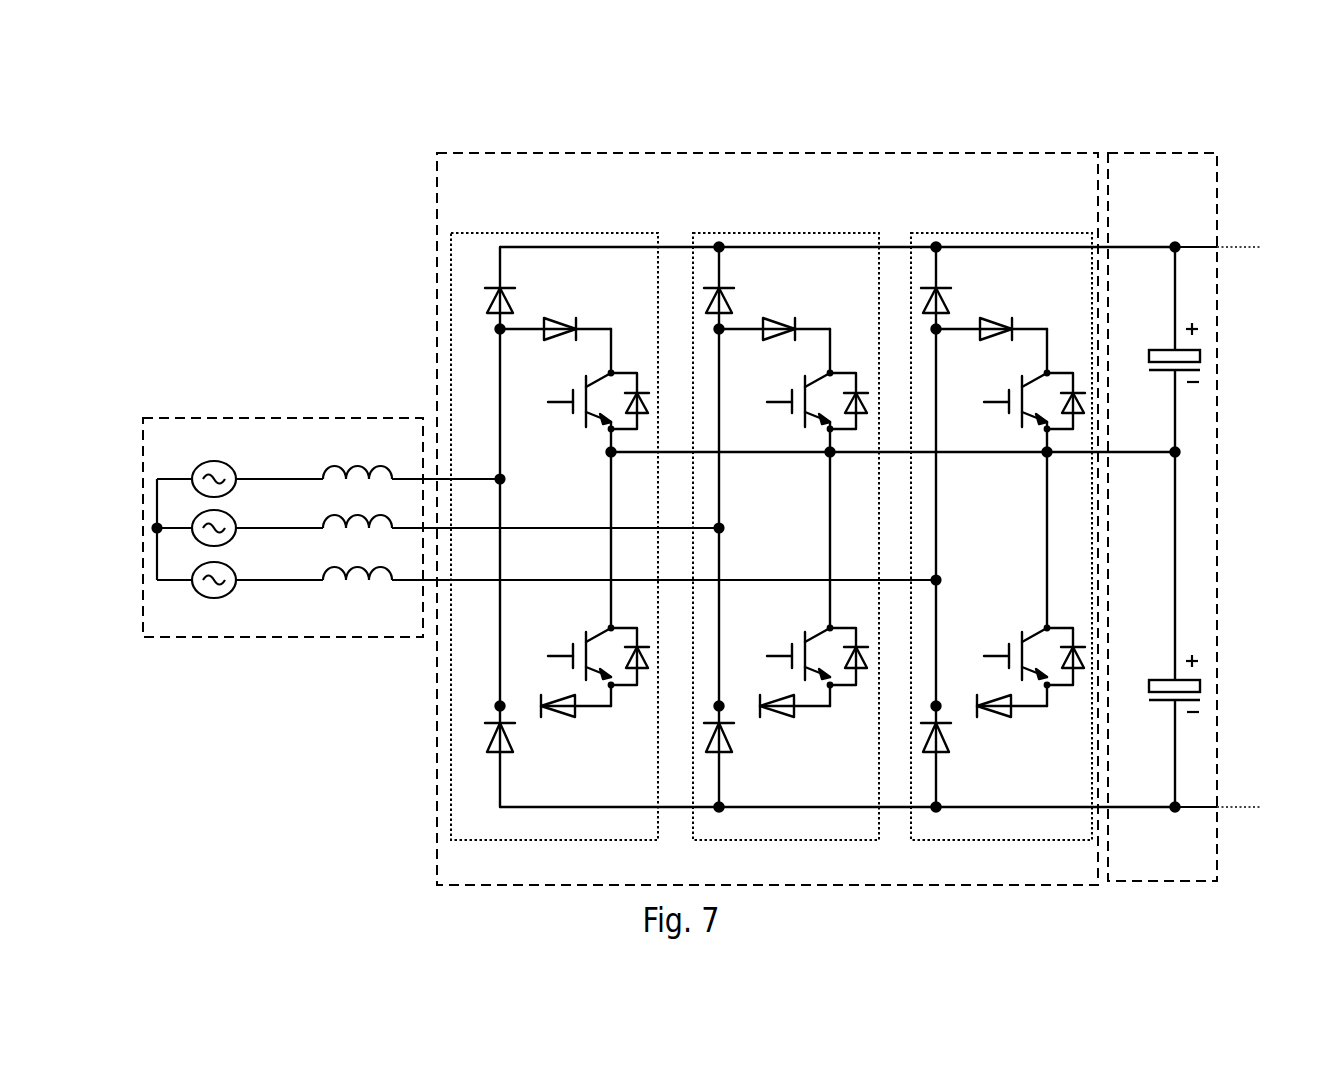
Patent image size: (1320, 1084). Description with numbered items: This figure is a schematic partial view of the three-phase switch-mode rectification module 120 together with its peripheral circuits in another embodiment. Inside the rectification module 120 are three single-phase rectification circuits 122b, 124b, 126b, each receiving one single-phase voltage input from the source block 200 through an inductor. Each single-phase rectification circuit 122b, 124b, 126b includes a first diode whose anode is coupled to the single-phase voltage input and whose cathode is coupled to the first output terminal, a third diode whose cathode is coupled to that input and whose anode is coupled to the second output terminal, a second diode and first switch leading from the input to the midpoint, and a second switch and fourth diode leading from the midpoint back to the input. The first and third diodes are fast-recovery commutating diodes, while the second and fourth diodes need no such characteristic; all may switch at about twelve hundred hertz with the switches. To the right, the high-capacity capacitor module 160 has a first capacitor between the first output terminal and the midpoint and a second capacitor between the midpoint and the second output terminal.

The three-phase switch-mode rectification module 120 is at (702, 152).
The single-phase rectification circuit 122b is at (563, 233).
The single-phase rectification circuit 124b is at (805, 233).
The single-phase rectification circuit 126b is at (1018, 233).
The high-capacity capacitor module 160 is at (1152, 153).
The three-phase AC power source 200 is at (330, 417).